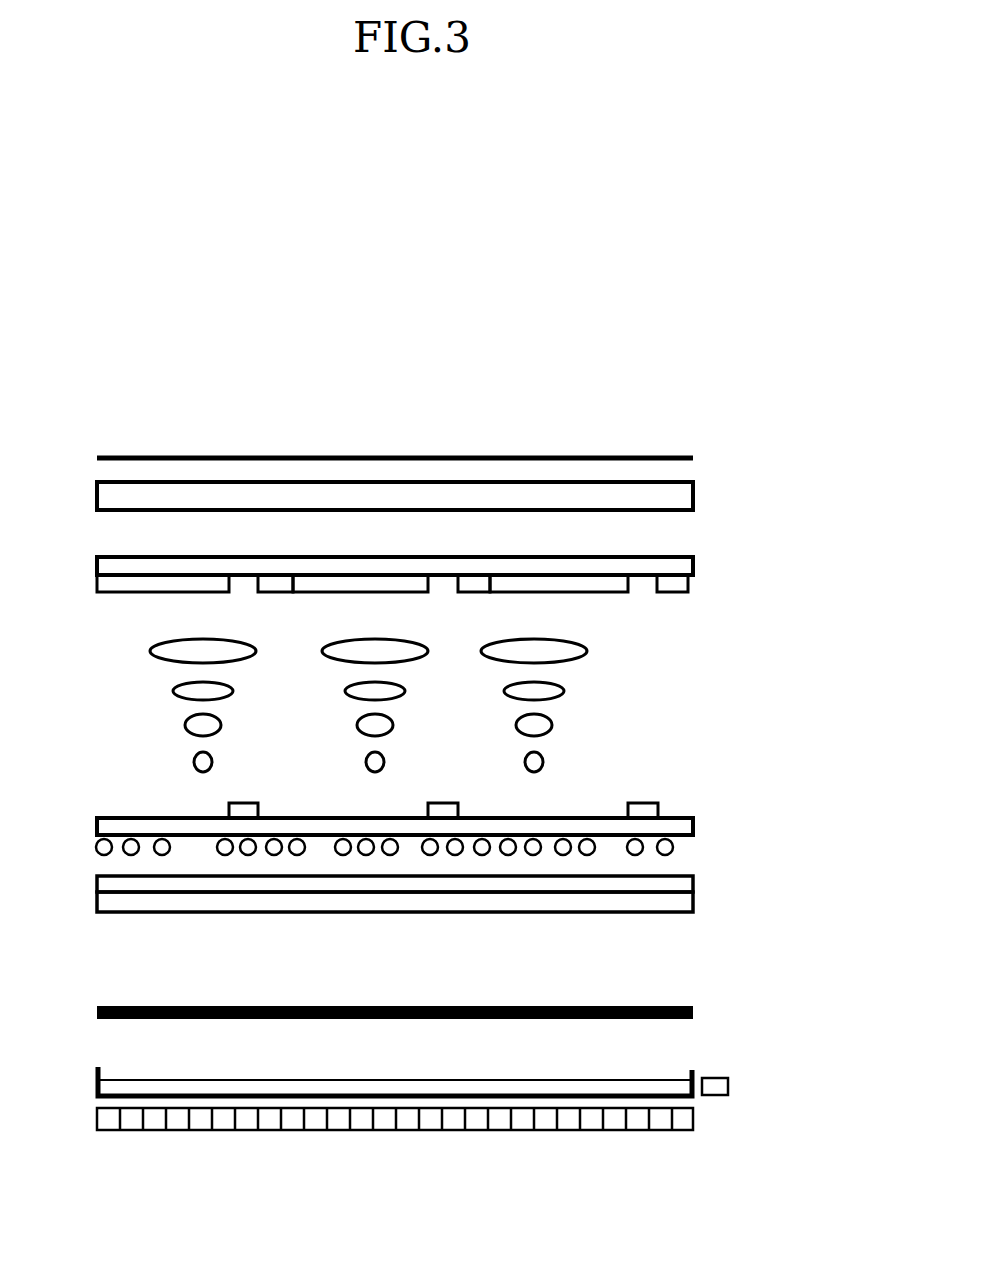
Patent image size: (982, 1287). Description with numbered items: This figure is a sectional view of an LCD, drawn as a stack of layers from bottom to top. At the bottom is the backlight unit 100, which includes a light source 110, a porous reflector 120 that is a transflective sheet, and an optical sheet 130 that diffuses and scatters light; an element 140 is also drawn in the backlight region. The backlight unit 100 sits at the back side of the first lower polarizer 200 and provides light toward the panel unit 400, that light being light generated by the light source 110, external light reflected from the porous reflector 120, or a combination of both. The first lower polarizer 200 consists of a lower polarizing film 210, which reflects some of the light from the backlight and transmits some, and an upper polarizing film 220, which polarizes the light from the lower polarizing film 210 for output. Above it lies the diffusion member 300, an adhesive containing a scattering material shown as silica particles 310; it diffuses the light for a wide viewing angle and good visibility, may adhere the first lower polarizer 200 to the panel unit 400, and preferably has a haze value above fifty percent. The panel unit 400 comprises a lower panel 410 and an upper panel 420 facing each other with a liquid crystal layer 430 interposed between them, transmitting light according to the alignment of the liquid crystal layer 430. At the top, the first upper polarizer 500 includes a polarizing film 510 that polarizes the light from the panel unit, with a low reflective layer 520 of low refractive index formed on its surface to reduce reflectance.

The backlight unit 100 is at (498, 1089).
The light source 110 is at (728, 1086).
The porous reflector 120 is at (460, 1130).
The optical sheet 130 is at (693, 1012).
The light guide plate 140 is at (288, 1088).
The first lower polarizer 200 is at (498, 895).
The lower polarizing film 210 is at (690, 903).
The upper polarizing film 220 is at (693, 886).
The diffusion member 300 is at (416, 875).
The silica particles 310 is at (100, 854).
The panel unit 400 is at (498, 693).
The lower panel 410 is at (458, 821).
The upper panel 420 is at (690, 568).
The liquid crystal layer 430 is at (643, 680).
The first upper polarizer 500 is at (498, 473).
The polarizing film 510 is at (693, 494).
The low reflective layer 520 is at (693, 458).